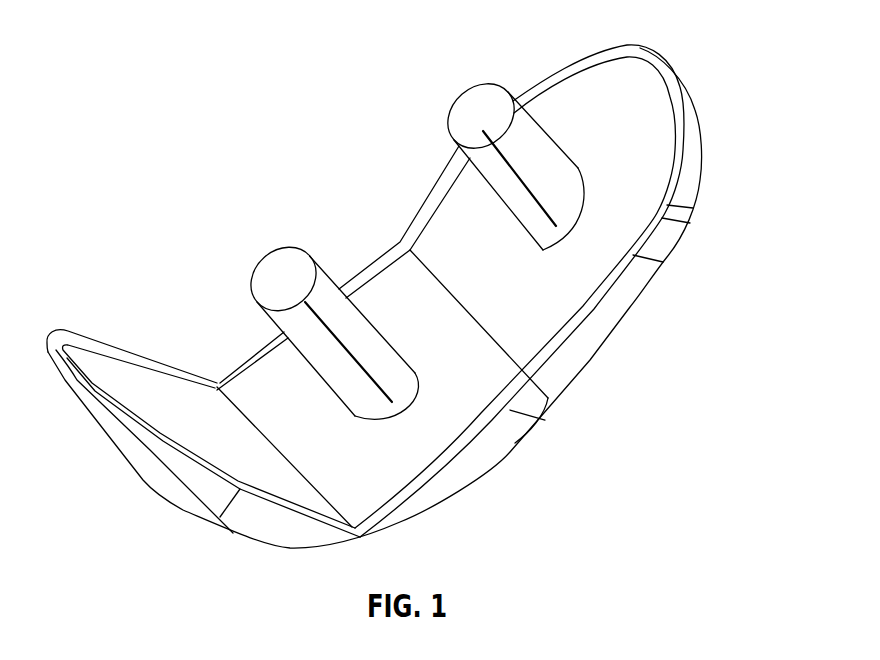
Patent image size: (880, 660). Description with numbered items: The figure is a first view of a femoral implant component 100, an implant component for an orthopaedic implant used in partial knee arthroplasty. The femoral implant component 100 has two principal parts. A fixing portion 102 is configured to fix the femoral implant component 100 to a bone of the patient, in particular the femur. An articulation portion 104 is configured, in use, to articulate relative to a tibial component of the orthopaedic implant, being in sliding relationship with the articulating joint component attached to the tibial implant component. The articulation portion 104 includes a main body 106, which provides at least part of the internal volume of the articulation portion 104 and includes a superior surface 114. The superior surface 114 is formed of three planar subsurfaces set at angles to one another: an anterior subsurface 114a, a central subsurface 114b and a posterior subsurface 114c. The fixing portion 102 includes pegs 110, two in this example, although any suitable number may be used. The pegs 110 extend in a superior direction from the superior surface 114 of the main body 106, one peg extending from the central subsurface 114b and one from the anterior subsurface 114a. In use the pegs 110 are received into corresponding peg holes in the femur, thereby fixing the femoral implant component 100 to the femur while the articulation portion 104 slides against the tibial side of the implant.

The femoral implant component 100 is at (206, 71).
The fixing portion 102 is at (260, 236).
The articulation portion 104 is at (590, 383).
The main body 106 is at (488, 382).
The pegs 110 is at (280, 284).
The superior surface 114 is at (547, 298).
The anterior subsurface 114a is at (607, 210).
The central subsurface 114b is at (287, 393).
The posterior subsurface 114c is at (173, 410).